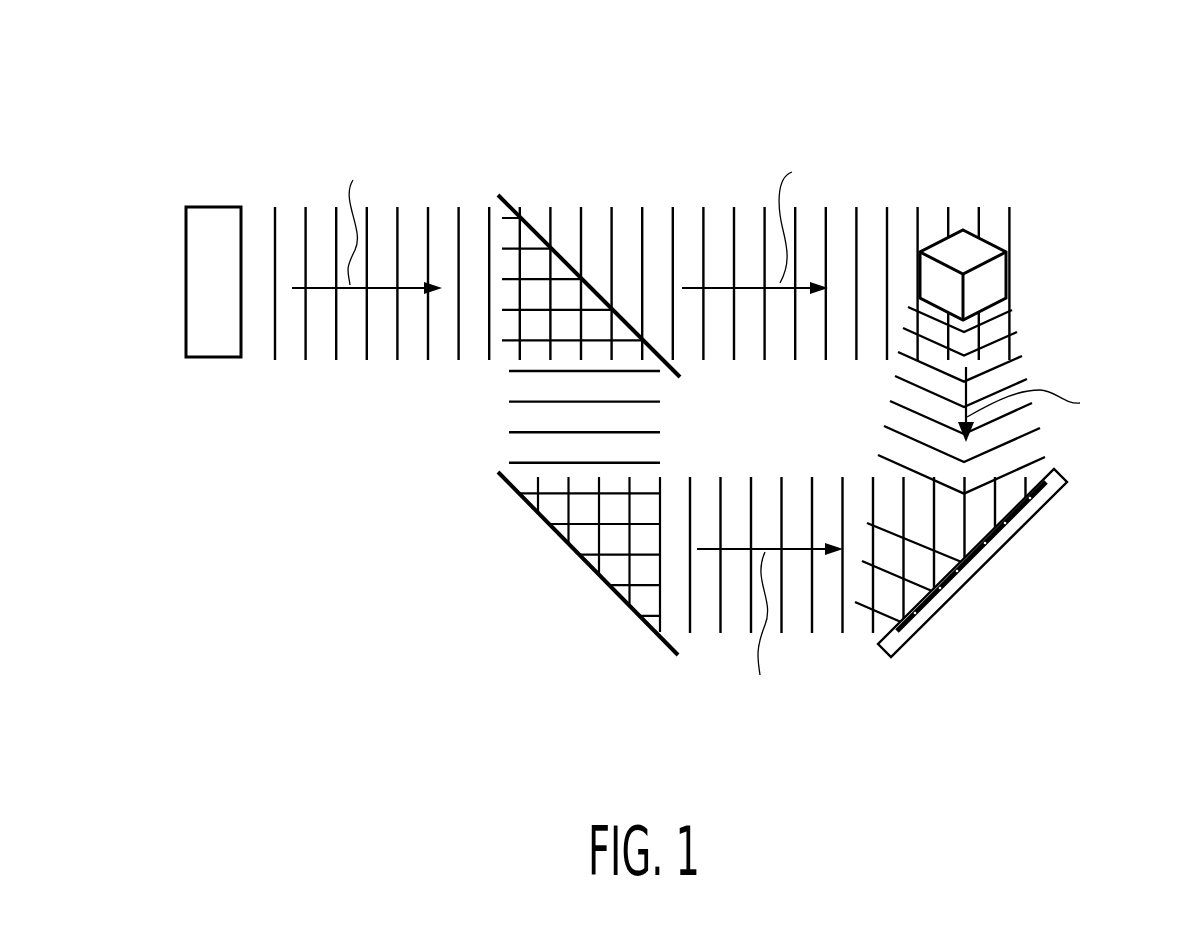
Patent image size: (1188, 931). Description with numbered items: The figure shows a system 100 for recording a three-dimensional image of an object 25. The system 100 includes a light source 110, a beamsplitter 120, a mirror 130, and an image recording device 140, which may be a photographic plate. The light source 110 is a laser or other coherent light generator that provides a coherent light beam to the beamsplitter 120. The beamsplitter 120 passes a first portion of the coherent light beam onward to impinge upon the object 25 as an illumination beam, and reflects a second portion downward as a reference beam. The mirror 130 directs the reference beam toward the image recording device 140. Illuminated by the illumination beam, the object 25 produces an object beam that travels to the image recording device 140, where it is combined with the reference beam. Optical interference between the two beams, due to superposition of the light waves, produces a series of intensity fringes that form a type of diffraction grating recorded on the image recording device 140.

The system 100 is at (1182, 42).
The light source 110 is at (210, 207).
The beamsplitter 120 is at (625, 317).
The object 25 is at (987, 242).
The mirror 130 is at (620, 600).
The image recording device 140 is at (965, 590).